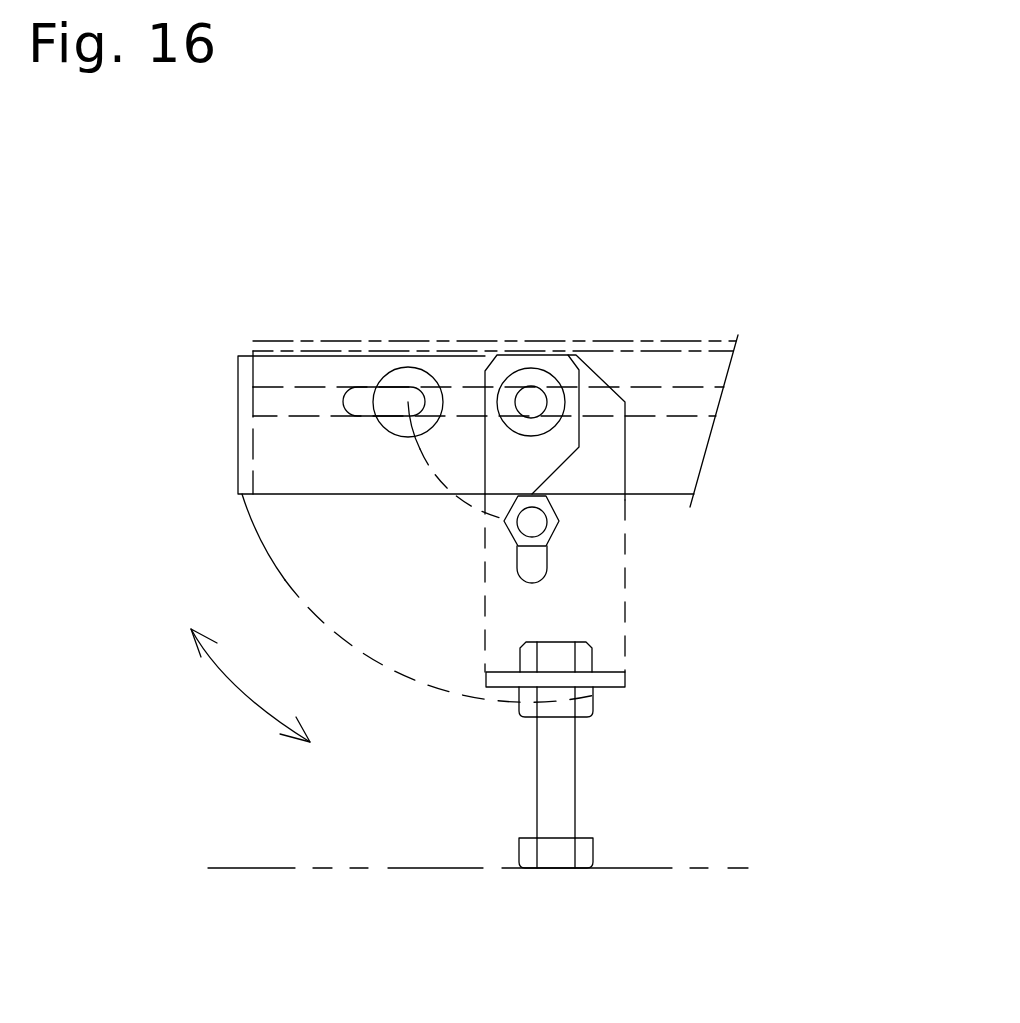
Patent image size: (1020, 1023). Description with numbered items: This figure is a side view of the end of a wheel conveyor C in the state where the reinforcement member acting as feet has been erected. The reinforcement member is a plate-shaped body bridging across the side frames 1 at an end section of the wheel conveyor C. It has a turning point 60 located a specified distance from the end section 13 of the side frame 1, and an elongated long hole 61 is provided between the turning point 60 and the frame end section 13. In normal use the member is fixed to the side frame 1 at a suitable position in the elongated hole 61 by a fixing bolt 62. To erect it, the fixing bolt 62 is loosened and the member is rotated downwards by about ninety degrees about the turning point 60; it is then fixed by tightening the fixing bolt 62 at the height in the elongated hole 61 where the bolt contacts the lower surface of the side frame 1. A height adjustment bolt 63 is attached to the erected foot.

The side frame 1 is at (243, 387).
The end section 13 is at (234, 440).
The turning point 60 is at (543, 380).
The elongated long hole 61 is at (357, 408).
The fixing bolt 62 is at (418, 372).
The height adjustment bolt 63 is at (575, 800).
The wheel conveyor C is at (735, 572).